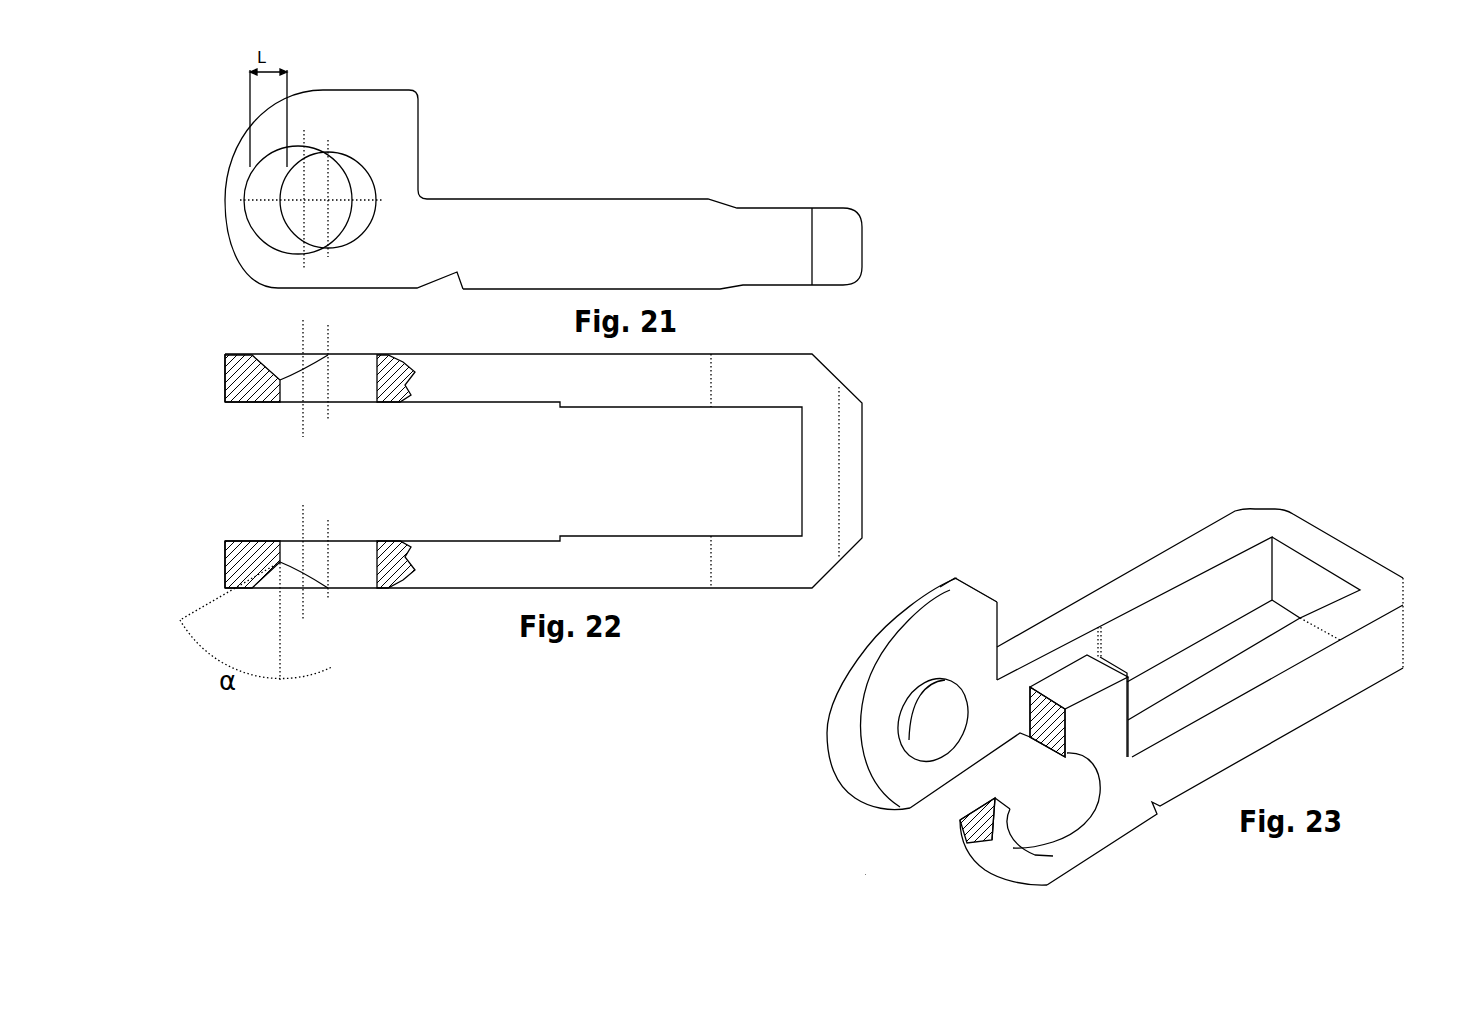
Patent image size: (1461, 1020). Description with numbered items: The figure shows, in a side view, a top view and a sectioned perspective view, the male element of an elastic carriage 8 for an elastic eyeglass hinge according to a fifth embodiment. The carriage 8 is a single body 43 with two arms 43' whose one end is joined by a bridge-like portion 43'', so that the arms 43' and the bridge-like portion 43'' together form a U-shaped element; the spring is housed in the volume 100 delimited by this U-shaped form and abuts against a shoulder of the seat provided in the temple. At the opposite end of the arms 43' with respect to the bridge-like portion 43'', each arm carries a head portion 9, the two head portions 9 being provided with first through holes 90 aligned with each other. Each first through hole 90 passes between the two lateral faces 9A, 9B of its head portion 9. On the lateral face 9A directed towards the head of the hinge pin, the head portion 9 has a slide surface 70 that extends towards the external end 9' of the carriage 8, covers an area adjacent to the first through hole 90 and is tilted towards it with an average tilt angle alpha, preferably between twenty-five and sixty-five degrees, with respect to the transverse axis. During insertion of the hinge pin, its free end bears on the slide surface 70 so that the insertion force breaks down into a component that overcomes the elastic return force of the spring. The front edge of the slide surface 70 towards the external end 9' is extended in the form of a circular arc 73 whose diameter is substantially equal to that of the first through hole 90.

In FIG. 21, the carriage 8 is at (814, 115).
In FIG. 22, the carriage 8 is at (968, 337).
In FIG. 23, the carriage 8 is at (1300, 388).
In FIG. 21, the head portion 9 is at (378, 174).
In FIG. 22, the head portion 9 is at (404, 499).
In FIG. 23, the head portion 9 is at (1028, 699).
In FIG. 21, the external end 9' is at (247, 189).
In FIG. 22, the external end 9' is at (196, 471).
In FIG. 23, the external end 9' is at (923, 731).
In FIG. 22, the lateral face 9A is at (238, 363).
In FIG. 23, the lateral face 9A is at (1117, 732).
In FIG. 22, the lateral face 9B is at (260, 402).
In FIG. 23, the lateral face 9B is at (986, 654).
In FIG. 21, the body 43 is at (635, 207).
In FIG. 22, the body 43 is at (543, 471).
In FIG. 23, the body 43 is at (1200, 656).
In FIG. 22, the arm 43' is at (707, 488).
In FIG. 23, the arm 43' is at (1267, 631).
In FIG. 21, the bridge-like portion 43'' is at (889, 246).
In FIG. 22, the bridge-like portion 43'' is at (896, 472).
In FIG. 23, the bridge-like portion 43'' is at (1358, 563).
In FIG. 21, the slide surface 70 is at (268, 185).
In FIG. 22, the slide surface 70 is at (267, 358).
In FIG. 23, the slide surface 70 is at (1043, 868).
In FIG. 21, the circular arc 73 is at (265, 240).
In FIG. 23, the circular arc 73 is at (1013, 852).
In FIG. 22, the first through hole 90 is at (341, 415).
In FIG. 23, the first through hole 90 is at (1018, 786).
In FIG. 22, the volume 100 is at (654, 484).
In FIG. 23, the volume 100 is at (1222, 602).